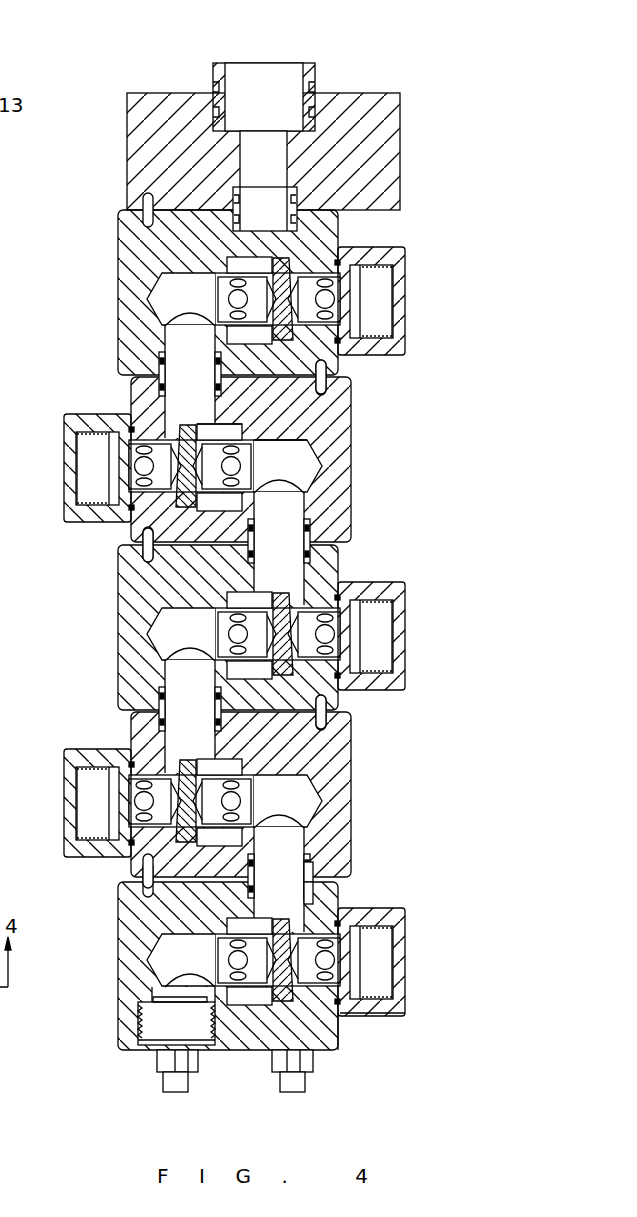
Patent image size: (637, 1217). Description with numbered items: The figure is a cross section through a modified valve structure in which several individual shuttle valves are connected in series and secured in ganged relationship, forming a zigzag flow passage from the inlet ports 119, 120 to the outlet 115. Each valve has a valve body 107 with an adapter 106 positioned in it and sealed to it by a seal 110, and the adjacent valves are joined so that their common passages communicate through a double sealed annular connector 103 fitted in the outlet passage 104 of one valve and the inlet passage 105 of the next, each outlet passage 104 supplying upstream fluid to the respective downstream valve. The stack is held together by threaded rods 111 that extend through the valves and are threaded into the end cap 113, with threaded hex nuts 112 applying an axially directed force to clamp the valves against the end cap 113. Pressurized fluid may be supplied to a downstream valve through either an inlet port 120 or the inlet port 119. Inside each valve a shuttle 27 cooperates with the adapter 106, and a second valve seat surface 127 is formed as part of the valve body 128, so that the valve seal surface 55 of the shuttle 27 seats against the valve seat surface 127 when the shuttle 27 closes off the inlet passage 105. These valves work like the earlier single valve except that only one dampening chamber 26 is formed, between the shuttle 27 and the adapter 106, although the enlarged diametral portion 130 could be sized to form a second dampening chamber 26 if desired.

The dampening chamber 26 is at (152, 750).
The shuttle 27 is at (337, 640).
The valve seal surface 55 is at (205, 433).
The double sealed annular connector 103 is at (312, 868).
The outlet passage 104 is at (313, 907).
The inlet passage 105 is at (283, 510).
The adapter 106 is at (383, 1014).
The valve body 107 is at (120, 942).
The seal 110 is at (340, 1015).
The threaded rod 111 is at (293, 1092).
The threaded hex nut 112 is at (313, 1079).
The end cap 113 is at (405, 174).
The outlet 115 is at (253, 60).
The inlet port 119 is at (153, 1025).
The inlet port 120 is at (408, 289).
The second valve seat surface 127 is at (352, 437).
The valve body 128 is at (352, 473).
The enlarged diametral portion 130 is at (238, 594).